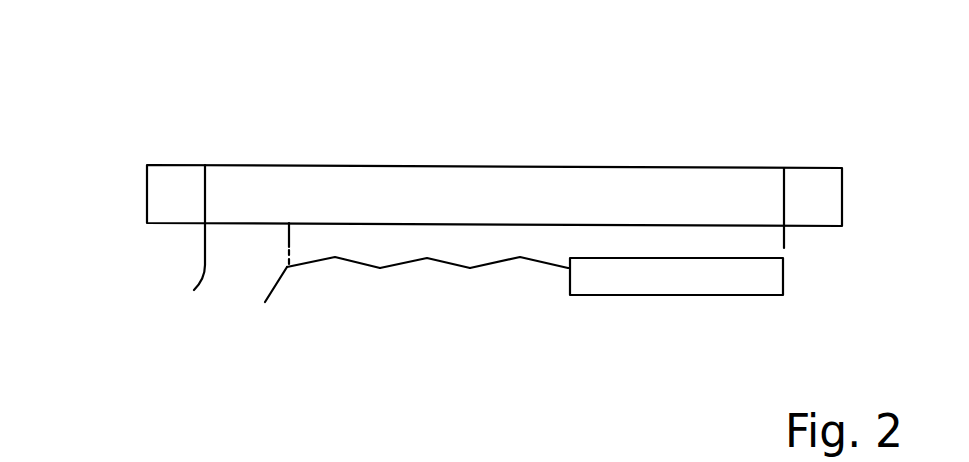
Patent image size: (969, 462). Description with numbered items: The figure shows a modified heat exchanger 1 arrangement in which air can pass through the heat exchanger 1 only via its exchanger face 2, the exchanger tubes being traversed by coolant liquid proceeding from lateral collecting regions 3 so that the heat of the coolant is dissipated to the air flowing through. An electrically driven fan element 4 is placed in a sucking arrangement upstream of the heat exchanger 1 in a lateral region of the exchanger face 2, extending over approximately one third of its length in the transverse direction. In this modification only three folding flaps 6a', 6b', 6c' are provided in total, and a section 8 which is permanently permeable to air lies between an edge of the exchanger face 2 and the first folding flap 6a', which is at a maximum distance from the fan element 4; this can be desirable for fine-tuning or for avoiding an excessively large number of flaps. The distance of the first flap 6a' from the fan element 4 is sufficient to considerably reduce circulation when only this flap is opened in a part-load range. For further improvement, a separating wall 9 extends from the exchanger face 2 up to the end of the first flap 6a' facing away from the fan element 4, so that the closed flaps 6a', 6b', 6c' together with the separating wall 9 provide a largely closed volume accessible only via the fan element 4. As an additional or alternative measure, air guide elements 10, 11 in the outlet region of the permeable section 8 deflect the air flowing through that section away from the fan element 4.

The heat exchanger 1 is at (378, 153).
The exchanger face 2 is at (462, 220).
The lateral collecting regions 3 is at (170, 182).
The fan element 4 is at (662, 275).
The first folding flap 6a' is at (333, 337).
The second folding flap 6b' is at (432, 339).
The third folding flap 6c' is at (530, 343).
The permanently air-permeable section 8 is at (236, 210).
The separating wall 9 is at (282, 252).
The air guide element 10 is at (573, 240).
The air guide element 11 is at (277, 302).